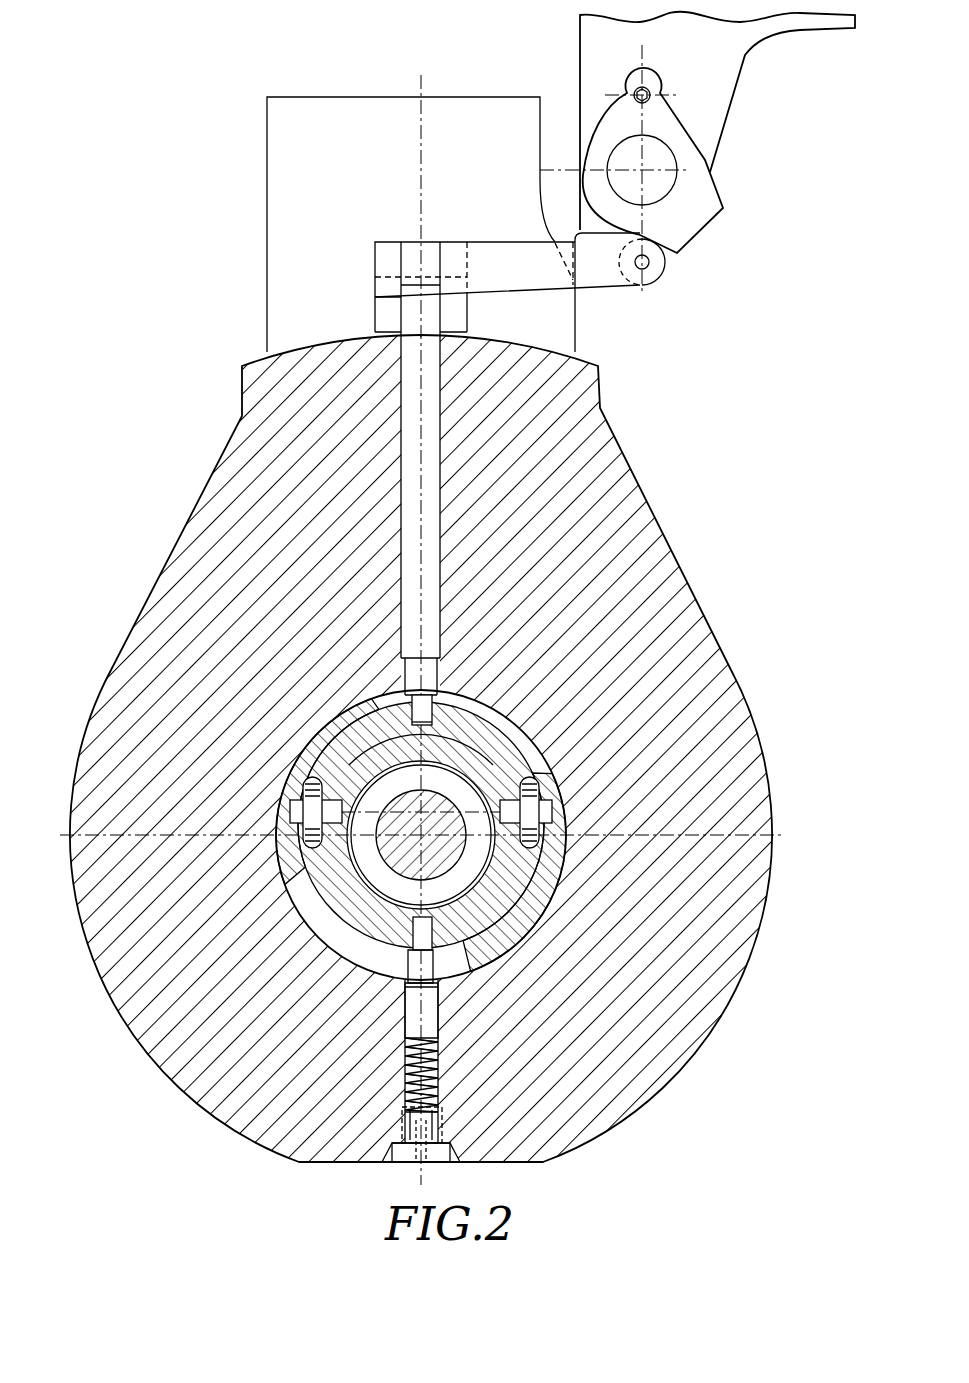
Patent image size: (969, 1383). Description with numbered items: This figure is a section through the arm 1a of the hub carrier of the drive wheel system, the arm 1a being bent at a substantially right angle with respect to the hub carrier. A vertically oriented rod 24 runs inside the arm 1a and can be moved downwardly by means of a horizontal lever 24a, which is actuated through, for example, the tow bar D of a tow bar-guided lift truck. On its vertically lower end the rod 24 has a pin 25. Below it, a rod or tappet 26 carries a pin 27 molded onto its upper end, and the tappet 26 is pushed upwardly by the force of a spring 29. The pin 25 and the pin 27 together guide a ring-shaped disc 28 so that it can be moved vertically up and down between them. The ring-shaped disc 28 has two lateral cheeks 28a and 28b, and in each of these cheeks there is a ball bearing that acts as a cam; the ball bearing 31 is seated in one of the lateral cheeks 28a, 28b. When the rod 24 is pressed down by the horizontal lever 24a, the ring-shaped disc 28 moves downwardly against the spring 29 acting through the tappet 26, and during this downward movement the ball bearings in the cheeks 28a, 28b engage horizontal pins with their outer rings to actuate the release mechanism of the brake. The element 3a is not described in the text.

The arm 1a is at (614, 490).
The rod 24 is at (432, 440).
The horizontal lever 24a is at (545, 279).
The pin 25 is at (445, 702).
The tappet 26 is at (433, 997).
The pin 27 is at (435, 975).
The ring-shaped disc 28 is at (500, 880).
The lateral cheek 28a is at (322, 870).
The lateral cheek 28b is at (540, 858).
The spring 29 is at (440, 1075).
The left trunnion pin 3a is at (300, 770).
The ball bearing 31 is at (545, 770).
The tow bar D is at (748, 148).